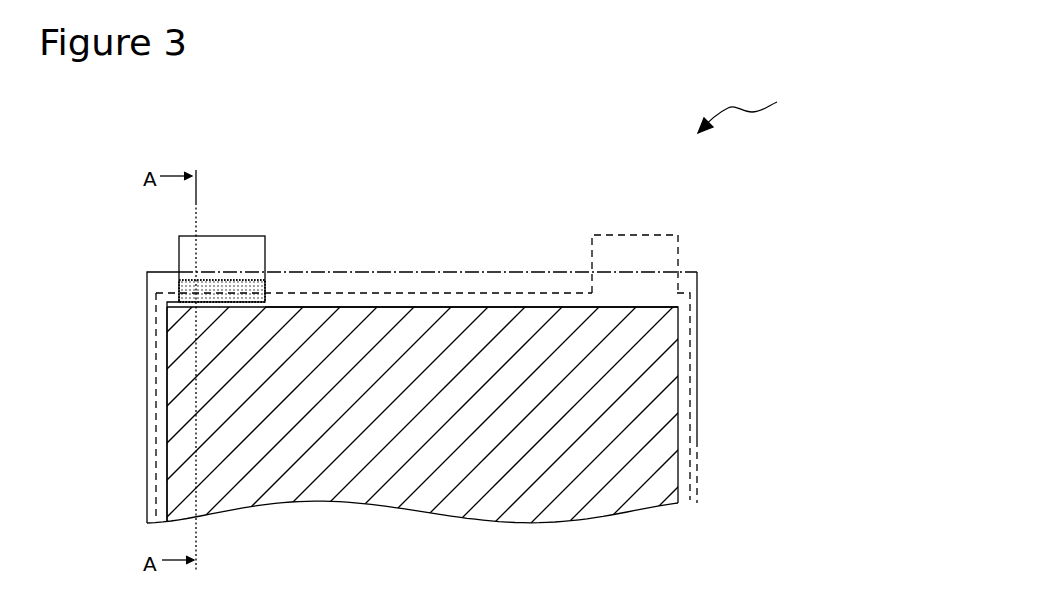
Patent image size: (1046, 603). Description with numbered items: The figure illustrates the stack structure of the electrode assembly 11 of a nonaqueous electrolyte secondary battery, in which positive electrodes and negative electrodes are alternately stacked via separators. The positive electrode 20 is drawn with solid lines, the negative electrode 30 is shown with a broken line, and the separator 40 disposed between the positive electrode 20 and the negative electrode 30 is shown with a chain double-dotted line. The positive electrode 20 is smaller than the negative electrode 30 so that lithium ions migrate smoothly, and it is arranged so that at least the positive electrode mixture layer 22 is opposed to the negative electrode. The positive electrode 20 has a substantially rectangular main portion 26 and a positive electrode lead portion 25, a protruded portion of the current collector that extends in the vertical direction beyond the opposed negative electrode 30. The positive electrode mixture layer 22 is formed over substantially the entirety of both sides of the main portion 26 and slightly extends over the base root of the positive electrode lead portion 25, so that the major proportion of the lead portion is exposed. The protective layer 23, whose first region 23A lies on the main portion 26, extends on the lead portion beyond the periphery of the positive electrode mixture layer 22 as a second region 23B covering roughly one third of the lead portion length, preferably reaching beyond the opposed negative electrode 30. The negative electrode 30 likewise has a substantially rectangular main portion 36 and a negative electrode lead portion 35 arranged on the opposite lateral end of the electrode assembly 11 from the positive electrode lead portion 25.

The electrode assembly 11 is at (818, 112).
The positive electrode 20 is at (407, 305).
The positive electrode mixture layer 22 is at (330, 503).
The protective layer 23 is at (243, 280).
The first region 23A is at (422, 500).
The second region 23B is at (222, 291).
The positive electrode lead portion 25 is at (240, 244).
The main portion 26 is at (173, 372).
The negative electrode 30 is at (487, 292).
The negative electrode lead portion 35 is at (633, 243).
The main portion 36 is at (697, 365).
The separator 40 is at (697, 283).